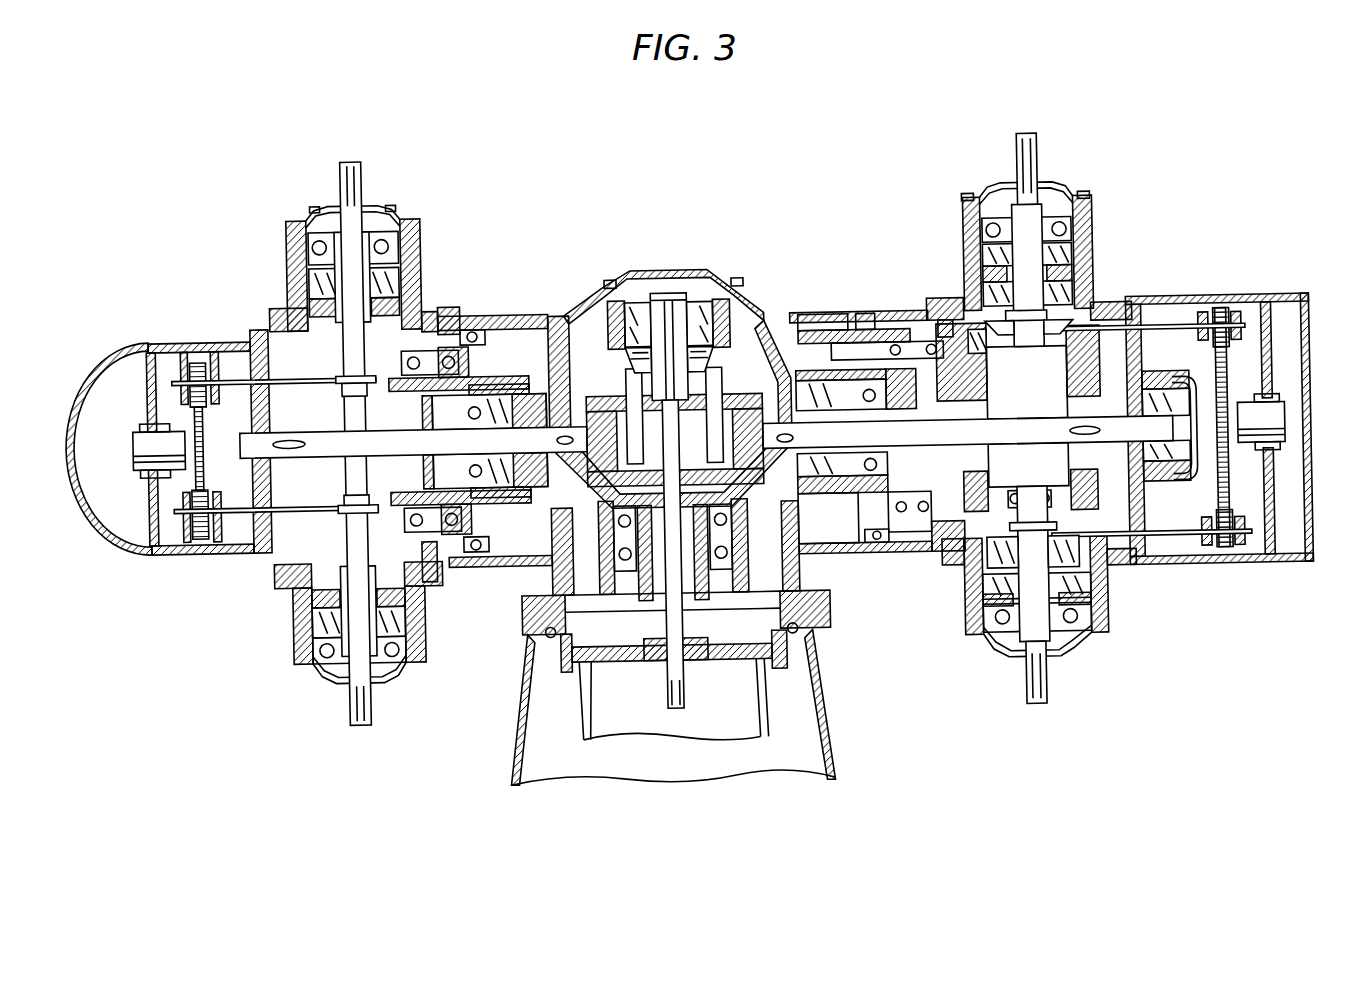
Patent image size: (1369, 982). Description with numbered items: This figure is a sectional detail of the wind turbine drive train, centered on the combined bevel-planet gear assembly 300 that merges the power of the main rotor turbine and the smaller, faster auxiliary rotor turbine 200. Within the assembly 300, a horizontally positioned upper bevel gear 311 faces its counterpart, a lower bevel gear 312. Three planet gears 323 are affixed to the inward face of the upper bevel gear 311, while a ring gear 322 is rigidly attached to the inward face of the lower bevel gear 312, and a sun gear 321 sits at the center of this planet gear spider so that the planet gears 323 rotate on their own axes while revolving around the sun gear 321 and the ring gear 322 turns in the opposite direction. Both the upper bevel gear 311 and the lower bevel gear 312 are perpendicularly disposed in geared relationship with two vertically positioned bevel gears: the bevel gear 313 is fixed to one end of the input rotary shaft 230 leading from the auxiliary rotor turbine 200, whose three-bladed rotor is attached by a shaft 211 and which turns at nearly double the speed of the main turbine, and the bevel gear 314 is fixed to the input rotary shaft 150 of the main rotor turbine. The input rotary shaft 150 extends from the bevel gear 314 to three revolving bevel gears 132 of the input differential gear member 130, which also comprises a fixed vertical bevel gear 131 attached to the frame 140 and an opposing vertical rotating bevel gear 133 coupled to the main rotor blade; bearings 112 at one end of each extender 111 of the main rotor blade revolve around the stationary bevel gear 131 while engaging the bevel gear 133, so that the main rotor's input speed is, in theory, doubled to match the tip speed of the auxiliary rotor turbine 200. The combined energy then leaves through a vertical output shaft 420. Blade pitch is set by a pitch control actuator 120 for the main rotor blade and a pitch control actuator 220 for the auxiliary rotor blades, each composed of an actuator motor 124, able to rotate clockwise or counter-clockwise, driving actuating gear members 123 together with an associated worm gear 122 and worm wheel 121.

The extender 111 is at (1041, 150).
The bearings 112 is at (1007, 236).
The pitch control actuator 120 is at (1255, 363).
The worm wheel 121 is at (966, 248).
The worm gear 122 is at (1083, 276).
The actuating gear members 123 is at (1227, 500).
The actuator motor 124 is at (1274, 426).
The input differential gear member 130 is at (1047, 490).
The fixed vertical bevel gear 131 is at (972, 355).
The revolving bevel gears 132 is at (1055, 334).
The rotating bevel gear 133 is at (1101, 373).
The frame 140 is at (915, 347).
The input rotary shaft 150 is at (993, 428).
The auxiliary rotor turbine 200 is at (278, 241).
The shaft 211 is at (367, 147).
The pitch control actuator 220 is at (229, 398).
The input rotary shaft 230 is at (379, 406).
The combined bevel-planet gear assembly 300 is at (678, 232).
The upper bevel gear 311 is at (575, 320).
The lower bevel gear 312 is at (571, 500).
The bevel gear 313 is at (529, 510).
The bevel gear 314 is at (796, 494).
The sun gear 321 is at (762, 382).
The ring gear 322 is at (735, 395).
The planet gears 323 is at (803, 562).
The vertical output shaft 420 is at (664, 618).